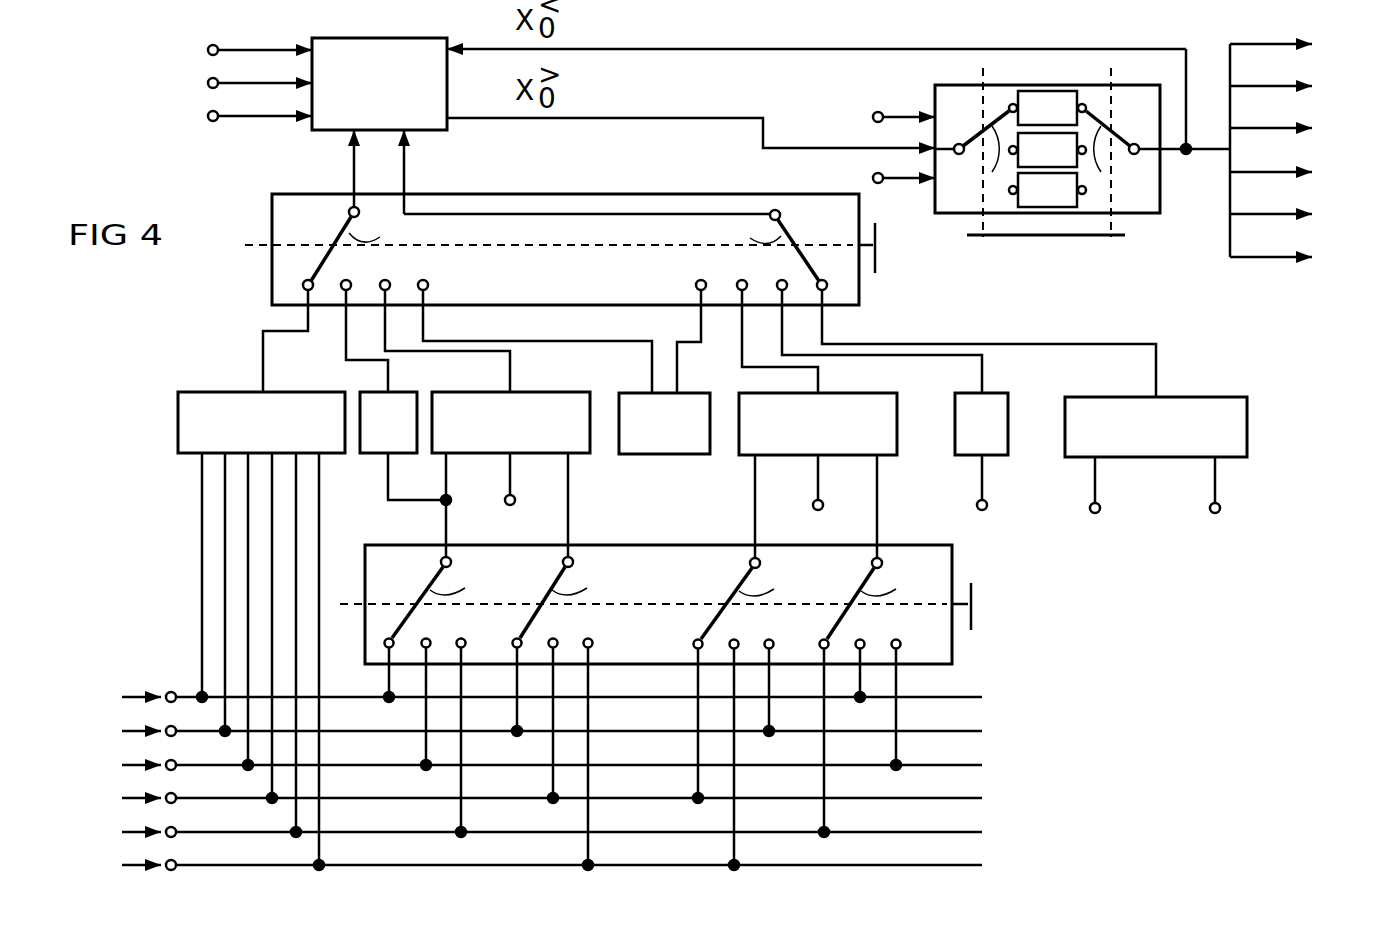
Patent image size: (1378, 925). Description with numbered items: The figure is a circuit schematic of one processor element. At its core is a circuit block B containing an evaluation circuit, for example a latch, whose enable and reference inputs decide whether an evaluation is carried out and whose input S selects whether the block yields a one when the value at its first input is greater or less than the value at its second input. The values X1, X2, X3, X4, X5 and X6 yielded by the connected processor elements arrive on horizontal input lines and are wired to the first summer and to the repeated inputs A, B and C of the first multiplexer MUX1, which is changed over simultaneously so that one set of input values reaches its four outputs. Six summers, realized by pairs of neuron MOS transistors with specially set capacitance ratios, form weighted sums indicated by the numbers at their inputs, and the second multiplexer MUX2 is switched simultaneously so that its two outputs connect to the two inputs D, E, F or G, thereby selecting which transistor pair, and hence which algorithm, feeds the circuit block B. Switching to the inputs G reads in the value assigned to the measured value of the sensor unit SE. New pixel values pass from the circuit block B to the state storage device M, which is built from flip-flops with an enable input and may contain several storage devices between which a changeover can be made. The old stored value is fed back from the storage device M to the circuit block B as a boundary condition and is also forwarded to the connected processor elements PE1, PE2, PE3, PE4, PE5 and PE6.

The circuit block B is at (313, 124).
The state storage device M is at (1135, 215).
The first multiplexer MUX1 is at (953, 648).
The second multiplexer MUX2 is at (860, 292).
The sensor unit SE is at (664, 423).
The connected processor element PE1 is at (1299, 48).
The connected processor element PE2 is at (1299, 90).
The connected processor element PE3 is at (1299, 132).
The connected processor element PE4 is at (1299, 176).
The connected processor element PE5 is at (1299, 218).
The connected processor element PE6 is at (1299, 261).
The value yielded by connected processor element X1 is at (536, 701).
The value yielded by connected processor element X2 is at (536, 735).
The value yielded by connected processor element X3 is at (536, 769).
The value yielded by connected processor element X4 is at (536, 802).
The value yielded by connected processor element X5 is at (536, 836).
The value yielded by connected processor element X6 is at (536, 869).